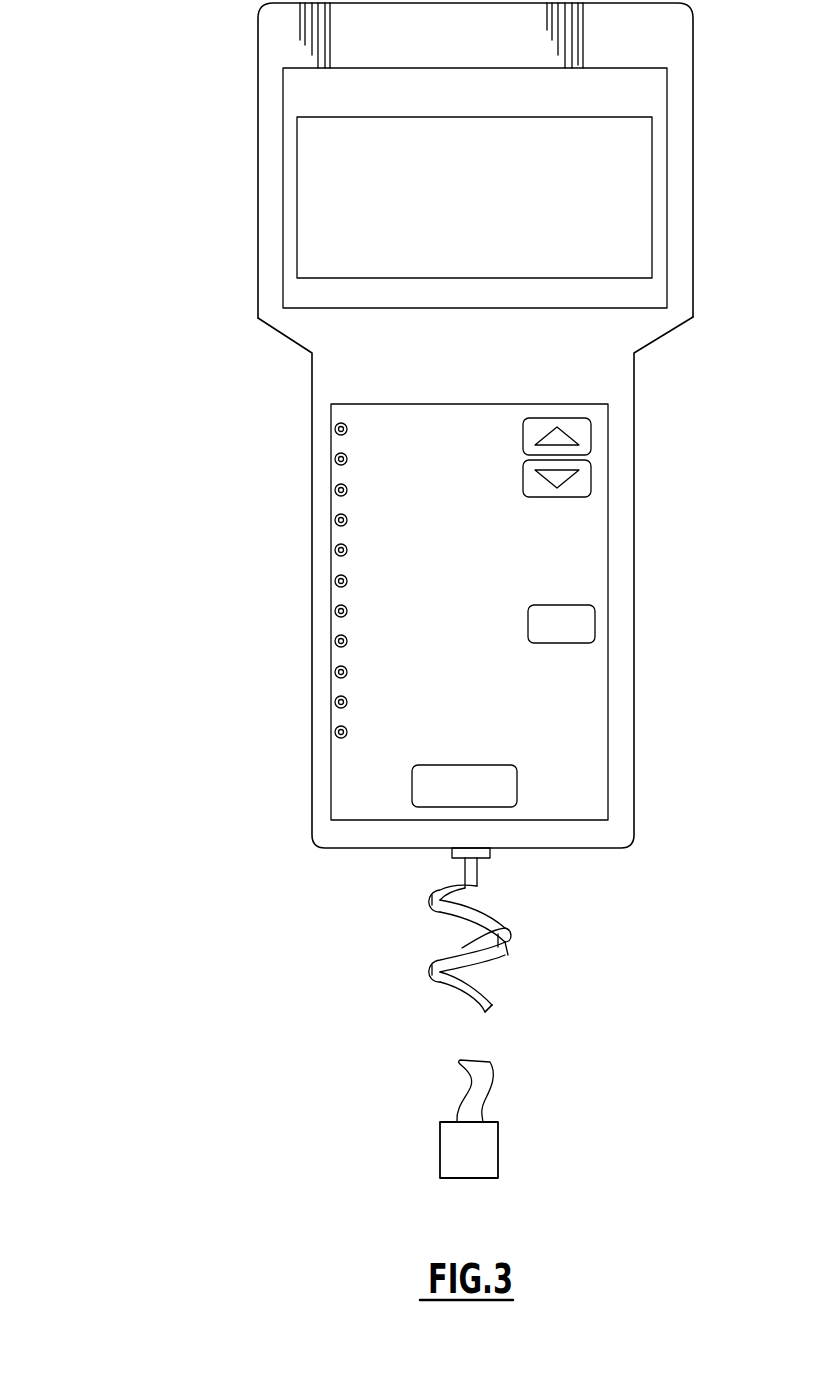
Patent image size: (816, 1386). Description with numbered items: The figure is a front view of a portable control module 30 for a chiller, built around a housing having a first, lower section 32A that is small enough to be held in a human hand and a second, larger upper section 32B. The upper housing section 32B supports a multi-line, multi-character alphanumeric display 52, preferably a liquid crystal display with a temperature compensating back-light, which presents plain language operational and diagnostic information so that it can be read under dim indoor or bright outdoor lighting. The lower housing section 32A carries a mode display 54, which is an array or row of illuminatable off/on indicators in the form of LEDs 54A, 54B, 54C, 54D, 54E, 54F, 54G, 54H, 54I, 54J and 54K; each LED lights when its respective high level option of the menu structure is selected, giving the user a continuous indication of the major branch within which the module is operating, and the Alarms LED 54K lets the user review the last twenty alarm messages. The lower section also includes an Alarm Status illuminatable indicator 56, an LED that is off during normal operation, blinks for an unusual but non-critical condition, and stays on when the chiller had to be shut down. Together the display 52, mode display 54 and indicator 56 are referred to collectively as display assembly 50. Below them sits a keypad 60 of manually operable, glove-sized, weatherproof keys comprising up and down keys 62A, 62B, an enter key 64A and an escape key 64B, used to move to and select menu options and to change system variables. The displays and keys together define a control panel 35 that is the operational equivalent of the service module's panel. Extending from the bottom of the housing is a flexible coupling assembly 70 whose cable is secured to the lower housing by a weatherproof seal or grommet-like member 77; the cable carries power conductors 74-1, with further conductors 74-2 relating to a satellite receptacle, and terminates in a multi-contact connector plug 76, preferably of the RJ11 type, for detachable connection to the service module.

The portable control module 30 is at (203, 78).
The lower housing section 32A is at (635, 377).
The upper housing section 32B is at (692, 218).
The control panel 35 is at (63, 885).
The display assembly 50 is at (143, 598).
The alphanumeric display 52 is at (297, 232).
The mode display 54 is at (201, 405).
The LED 54A is at (334, 429).
The LED 54B is at (334, 459).
The LED 54C is at (334, 490).
The LED 54D is at (334, 520).
The LED 54E is at (334, 550).
The LED 54F is at (334, 581).
The LED 54G is at (334, 611).
The LED 54H is at (334, 641).
The LED 54I is at (334, 672).
The LED 54J is at (334, 702).
The LED 54K is at (334, 732).
The illuminatable indicator 56 is at (337, 377).
The keypad 60 is at (141, 980).
The up key 62A is at (522, 437).
The down key 62B is at (557, 497).
The enter key 64A is at (427, 807).
The escape key 64B is at (530, 635).
The flexible coupling assembly 70 is at (626, 872).
The power conductors 74-1 is at (482, 995).
The conductors 74-2 is at (490, 1010).
The multi-contact connector plug 76 is at (498, 1152).
The weatherproof seal 77 is at (478, 860).